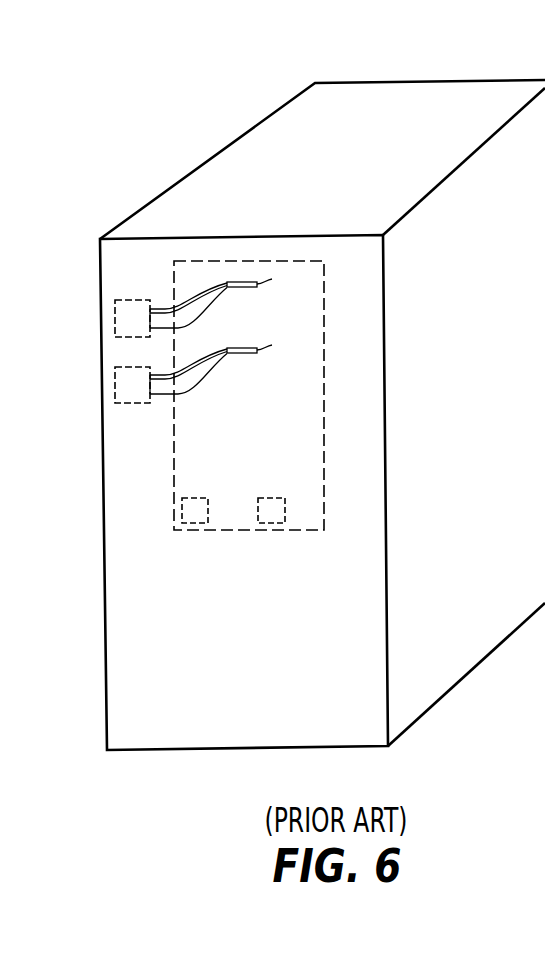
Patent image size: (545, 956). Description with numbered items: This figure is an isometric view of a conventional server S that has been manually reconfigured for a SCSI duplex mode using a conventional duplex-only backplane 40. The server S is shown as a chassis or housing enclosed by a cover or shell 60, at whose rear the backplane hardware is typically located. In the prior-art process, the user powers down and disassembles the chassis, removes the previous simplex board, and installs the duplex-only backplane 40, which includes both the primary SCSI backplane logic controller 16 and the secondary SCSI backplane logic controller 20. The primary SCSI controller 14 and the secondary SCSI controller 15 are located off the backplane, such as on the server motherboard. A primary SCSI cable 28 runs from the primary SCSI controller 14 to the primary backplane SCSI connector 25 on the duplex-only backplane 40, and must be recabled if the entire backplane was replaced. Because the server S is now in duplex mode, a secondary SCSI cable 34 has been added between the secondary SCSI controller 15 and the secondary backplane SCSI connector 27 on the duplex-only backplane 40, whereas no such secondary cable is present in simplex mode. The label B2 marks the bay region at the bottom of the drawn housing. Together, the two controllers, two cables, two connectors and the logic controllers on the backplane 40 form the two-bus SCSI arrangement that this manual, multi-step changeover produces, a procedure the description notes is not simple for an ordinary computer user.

The cover or shell 60 is at (485, 79).
The server S is at (192, 96).
The duplex-only backplane 40 is at (324, 356).
The primary SCSI controller 14 is at (137, 300).
The secondary SCSI controller 15 is at (133, 403).
The primary SCSI cable 28 is at (207, 311).
The primary backplane SCSI connector 25 is at (272, 279).
The secondary SCSI cable 34 is at (207, 377).
The secondary backplane SCSI connector 27 is at (272, 345).
The primary SCSI backplane logic controller 16 is at (193, 497).
The secondary SCSI backplane logic controller 20 is at (270, 497).
The bay B2 is at (334, 770).